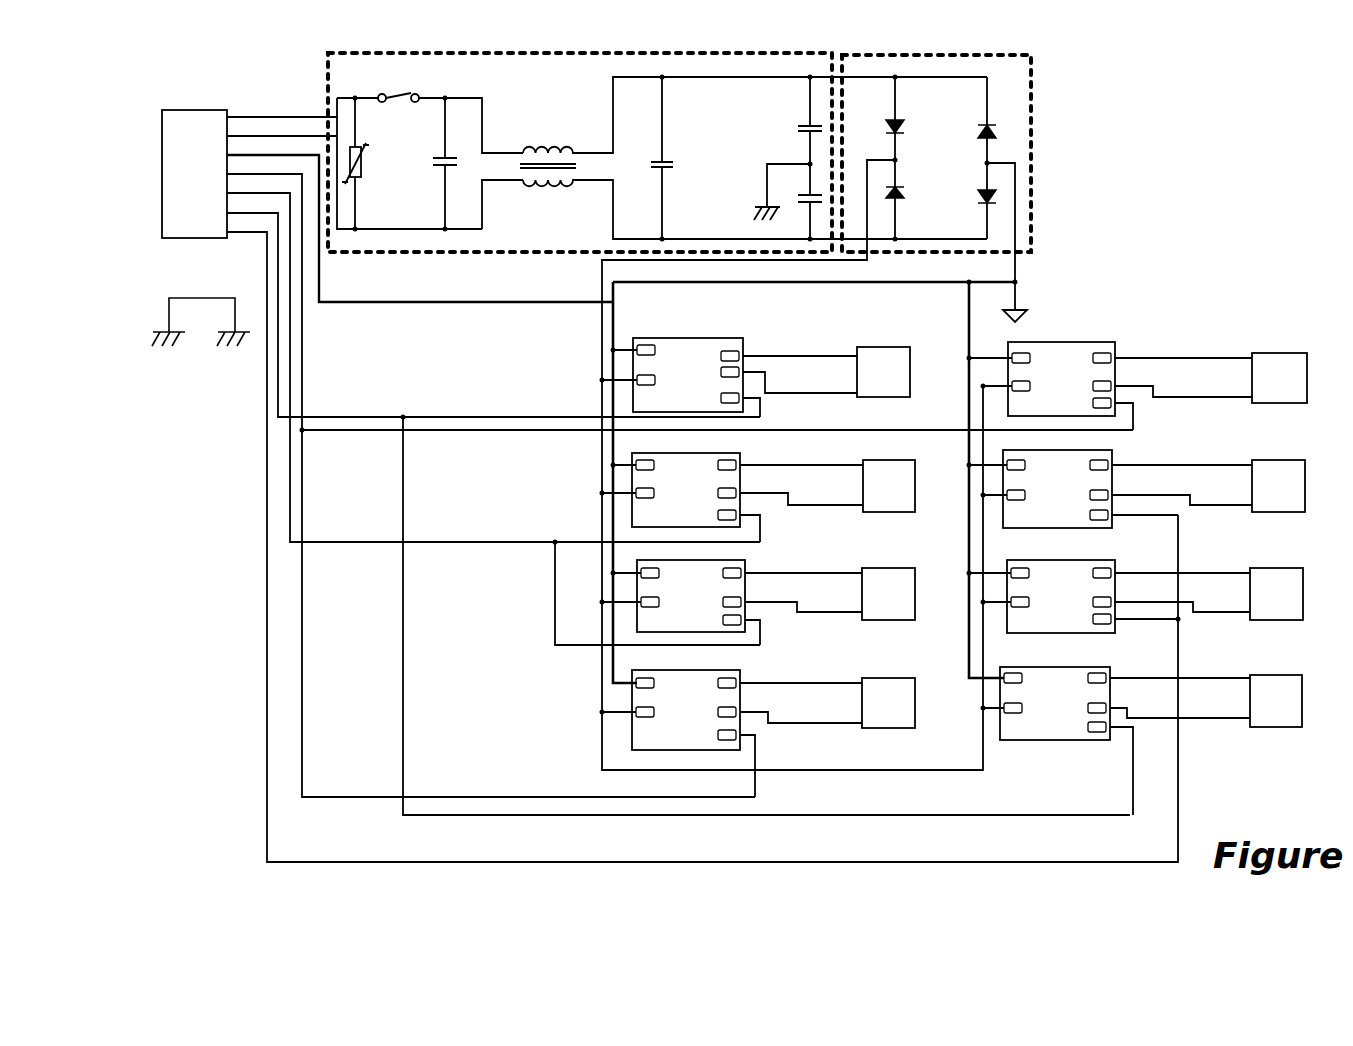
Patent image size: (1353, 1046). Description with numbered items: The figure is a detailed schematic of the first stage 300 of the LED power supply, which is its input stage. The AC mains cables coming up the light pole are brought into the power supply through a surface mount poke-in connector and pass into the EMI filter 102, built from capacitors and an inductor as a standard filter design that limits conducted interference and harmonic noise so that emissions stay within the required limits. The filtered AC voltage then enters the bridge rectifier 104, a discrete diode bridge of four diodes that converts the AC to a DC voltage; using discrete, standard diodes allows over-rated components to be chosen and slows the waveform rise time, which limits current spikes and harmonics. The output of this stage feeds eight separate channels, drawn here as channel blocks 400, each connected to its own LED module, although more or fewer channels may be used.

The first stage 300 is at (237, 112).
The EMI filter 102 is at (770, 50).
The bridge rectifier 104 is at (1035, 83).
The LED driver channel 400 is at (730, 339).